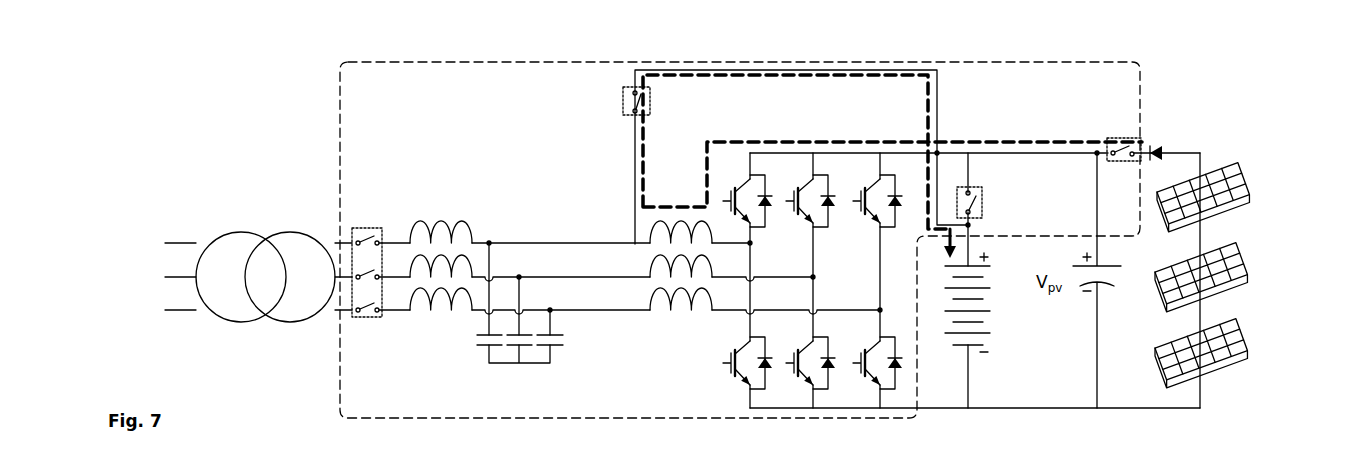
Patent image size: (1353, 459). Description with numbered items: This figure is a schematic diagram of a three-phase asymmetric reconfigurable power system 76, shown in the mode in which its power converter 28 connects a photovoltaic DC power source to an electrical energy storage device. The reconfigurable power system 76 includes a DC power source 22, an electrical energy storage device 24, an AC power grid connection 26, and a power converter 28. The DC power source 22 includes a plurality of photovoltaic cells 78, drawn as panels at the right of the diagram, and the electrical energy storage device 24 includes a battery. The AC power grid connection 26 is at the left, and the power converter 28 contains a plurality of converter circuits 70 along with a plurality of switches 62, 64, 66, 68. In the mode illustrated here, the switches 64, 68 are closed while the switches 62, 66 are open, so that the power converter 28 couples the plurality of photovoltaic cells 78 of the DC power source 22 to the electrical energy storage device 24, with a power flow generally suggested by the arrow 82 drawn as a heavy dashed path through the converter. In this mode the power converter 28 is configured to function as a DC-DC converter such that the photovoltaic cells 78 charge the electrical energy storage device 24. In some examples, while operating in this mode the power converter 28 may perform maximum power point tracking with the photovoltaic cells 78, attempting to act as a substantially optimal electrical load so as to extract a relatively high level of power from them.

The DC power source 22 is at (1228, 272).
The electrical energy storage device 24 is at (1003, 328).
The AC power grid connection 26 is at (178, 324).
The power converter 28 is at (340, 148).
The switch 62 is at (982, 190).
The switch 64 is at (623, 100).
The switch 66 is at (385, 318).
The switch 68 is at (1122, 163).
The converter circuits 70 is at (712, 349).
The reconfigurable power system 76 is at (196, 122).
The photovoltaic cells 78 is at (1248, 336).
The arrow 82 is at (988, 141).